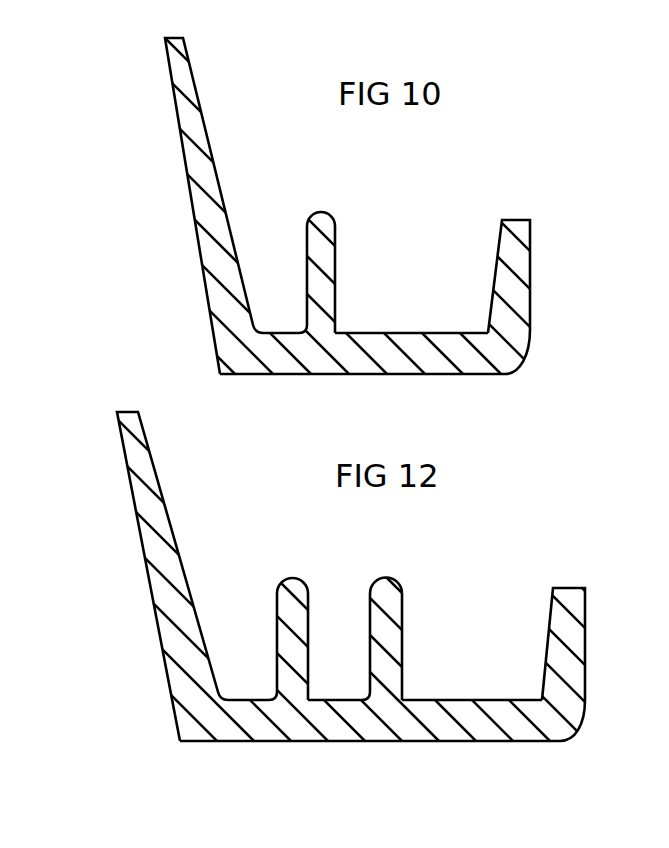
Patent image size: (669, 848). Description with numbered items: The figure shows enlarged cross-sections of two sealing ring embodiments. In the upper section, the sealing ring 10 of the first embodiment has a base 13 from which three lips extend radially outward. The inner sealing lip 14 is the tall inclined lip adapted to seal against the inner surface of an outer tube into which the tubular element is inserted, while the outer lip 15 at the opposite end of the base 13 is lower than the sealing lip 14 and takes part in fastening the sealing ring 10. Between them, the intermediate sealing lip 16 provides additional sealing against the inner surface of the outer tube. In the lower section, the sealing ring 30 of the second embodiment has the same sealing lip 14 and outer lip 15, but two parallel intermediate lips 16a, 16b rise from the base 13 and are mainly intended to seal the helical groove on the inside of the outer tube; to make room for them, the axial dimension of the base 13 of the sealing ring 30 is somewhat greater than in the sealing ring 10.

In FIG. 10, the sealing ring 10 is at (205, 123).
In FIG. 12, the sealing ring 30 is at (166, 504).
In FIG. 10, the sealing ring base 13 is at (410, 338).
In FIG. 12, the sealing ring base 13 is at (470, 708).
In FIG. 10, the sealing lip 14 is at (197, 196).
In FIG. 12, the sealing lip 14 is at (162, 600).
In FIG. 10, the outer lip 15 is at (531, 255).
In FIG. 12, the outer lip 15 is at (587, 608).
In FIG. 10, the intermediate sealing lip 16 is at (322, 216).
In FIG. 12, the intermediate lip 16a is at (291, 583).
In FIG. 12, the intermediate lip 16b is at (385, 581).